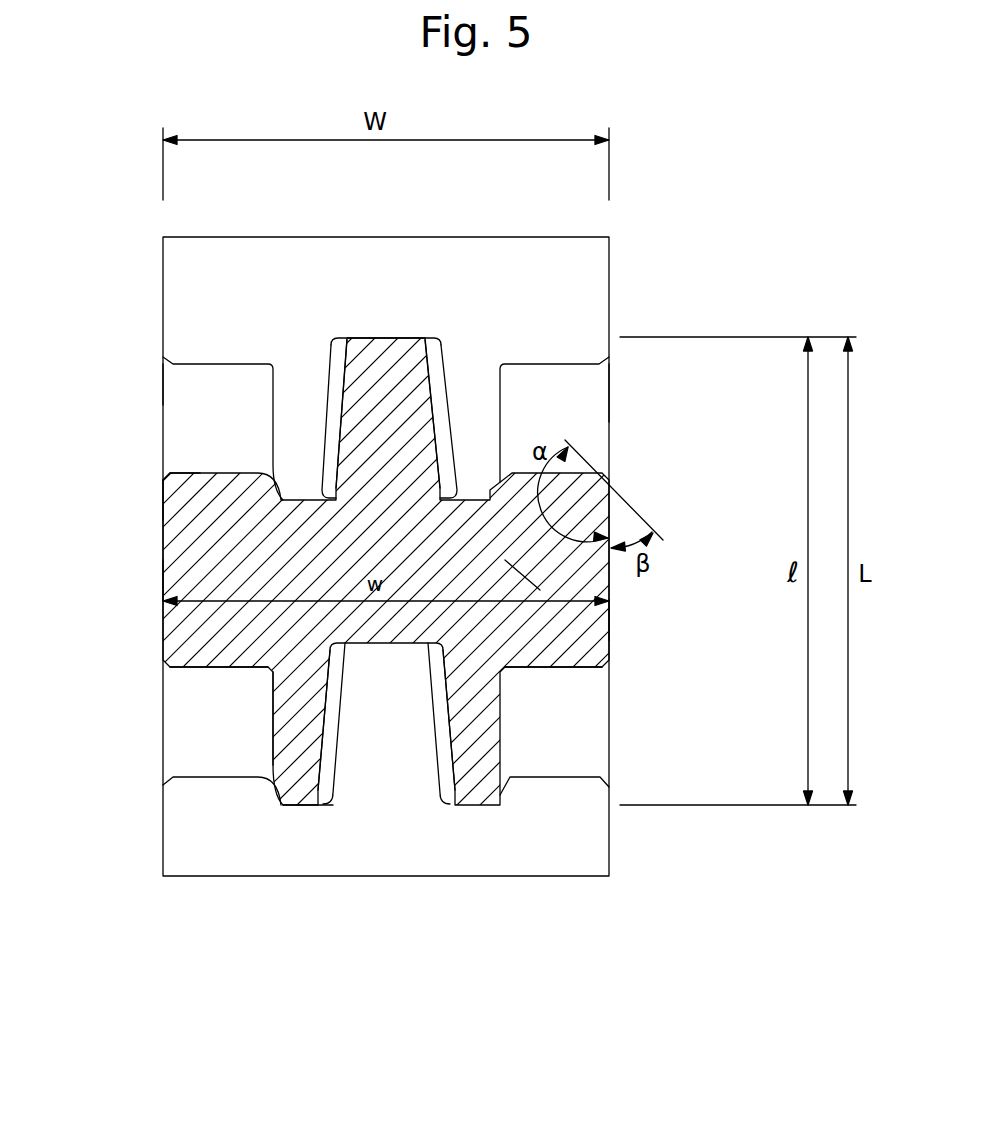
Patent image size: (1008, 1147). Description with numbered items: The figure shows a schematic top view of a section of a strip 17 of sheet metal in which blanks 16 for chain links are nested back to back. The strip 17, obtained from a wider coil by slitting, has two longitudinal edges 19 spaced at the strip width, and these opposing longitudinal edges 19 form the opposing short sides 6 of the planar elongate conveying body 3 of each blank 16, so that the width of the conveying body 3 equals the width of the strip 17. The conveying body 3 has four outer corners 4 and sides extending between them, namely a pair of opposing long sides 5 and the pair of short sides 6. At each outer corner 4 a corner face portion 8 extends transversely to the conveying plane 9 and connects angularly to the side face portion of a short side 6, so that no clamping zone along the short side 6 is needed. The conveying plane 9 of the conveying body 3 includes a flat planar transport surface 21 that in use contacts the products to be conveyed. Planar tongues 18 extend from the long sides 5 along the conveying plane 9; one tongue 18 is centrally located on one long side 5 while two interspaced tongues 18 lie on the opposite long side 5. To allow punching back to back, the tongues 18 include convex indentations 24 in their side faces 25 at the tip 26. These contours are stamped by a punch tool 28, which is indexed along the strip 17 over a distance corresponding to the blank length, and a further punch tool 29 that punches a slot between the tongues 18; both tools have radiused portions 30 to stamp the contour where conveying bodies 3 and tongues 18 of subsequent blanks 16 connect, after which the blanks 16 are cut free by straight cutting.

The conveying body 3 is at (223, 620).
The outer corners 4 is at (175, 488).
The long sides 5 is at (207, 668).
The short sides 6 is at (163, 566).
The corner face portion 8 is at (165, 488).
The conveying plane 9 is at (520, 574).
The transport surface 21 is at (630, 582).
The blank 16 is at (193, 297).
The strip 17 is at (631, 259).
The tongues 18 is at (378, 400).
The longitudinal edges 19 is at (162, 403).
The convex indentations 24 is at (282, 792).
The side faces 25 is at (270, 735).
The tip 26 is at (318, 790).
The punch tool 28 is at (207, 732).
The further punch tool 29 is at (328, 425).
The radiused portions 30 is at (318, 490).